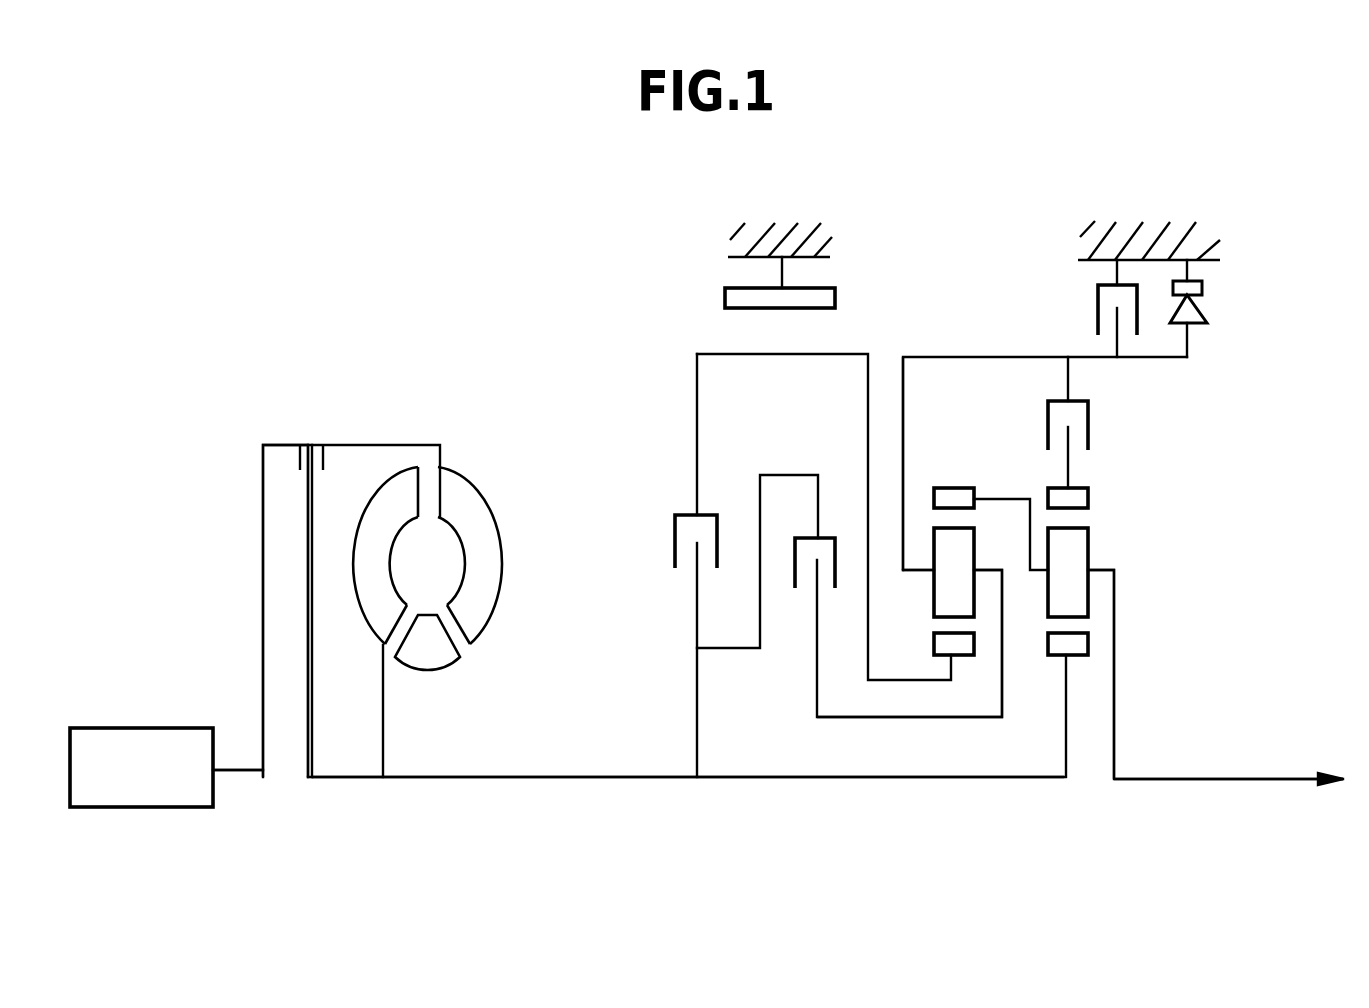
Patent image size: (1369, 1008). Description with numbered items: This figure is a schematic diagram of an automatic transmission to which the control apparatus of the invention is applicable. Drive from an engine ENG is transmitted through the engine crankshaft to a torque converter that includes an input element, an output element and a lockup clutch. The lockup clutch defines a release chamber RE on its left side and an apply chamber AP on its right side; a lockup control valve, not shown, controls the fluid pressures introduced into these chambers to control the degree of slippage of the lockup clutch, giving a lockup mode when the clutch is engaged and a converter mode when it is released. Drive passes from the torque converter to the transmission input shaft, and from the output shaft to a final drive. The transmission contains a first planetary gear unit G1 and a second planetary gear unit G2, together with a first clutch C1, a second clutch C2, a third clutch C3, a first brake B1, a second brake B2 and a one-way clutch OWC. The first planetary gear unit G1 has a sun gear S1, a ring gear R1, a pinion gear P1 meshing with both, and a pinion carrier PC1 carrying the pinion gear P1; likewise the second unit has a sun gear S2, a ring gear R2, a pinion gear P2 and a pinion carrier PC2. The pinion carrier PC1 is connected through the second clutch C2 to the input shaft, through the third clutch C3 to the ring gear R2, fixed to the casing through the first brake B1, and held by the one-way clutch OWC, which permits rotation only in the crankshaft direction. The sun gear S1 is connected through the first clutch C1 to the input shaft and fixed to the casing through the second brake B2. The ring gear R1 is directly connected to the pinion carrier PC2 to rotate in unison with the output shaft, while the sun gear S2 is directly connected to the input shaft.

The engine ENG is at (153, 728).
The apply chamber AP is at (358, 506).
The release chamber RE is at (306, 584).
The second brake B2 is at (725, 297).
The first clutch C1 is at (675, 547).
The second clutch C2 is at (822, 538).
The first planetary gear unit G1 is at (972, 412).
The pinion carrier PC1 is at (920, 567).
The ring gear R1 is at (958, 488).
The pinion gear P1 is at (934, 598).
The sun gear S1 is at (934, 645).
The first brake B1 is at (1098, 300).
The one-way clutch OWC is at (1208, 318).
The third clutch C3 is at (1088, 426).
The ring gear R2 is at (1088, 498).
The pinion gear P2 is at (1088, 545).
The pinion carrier PC2 is at (1114, 570).
The sun gear S2 is at (1047, 653).
The second planetary gear unit G2 is at (1087, 668).